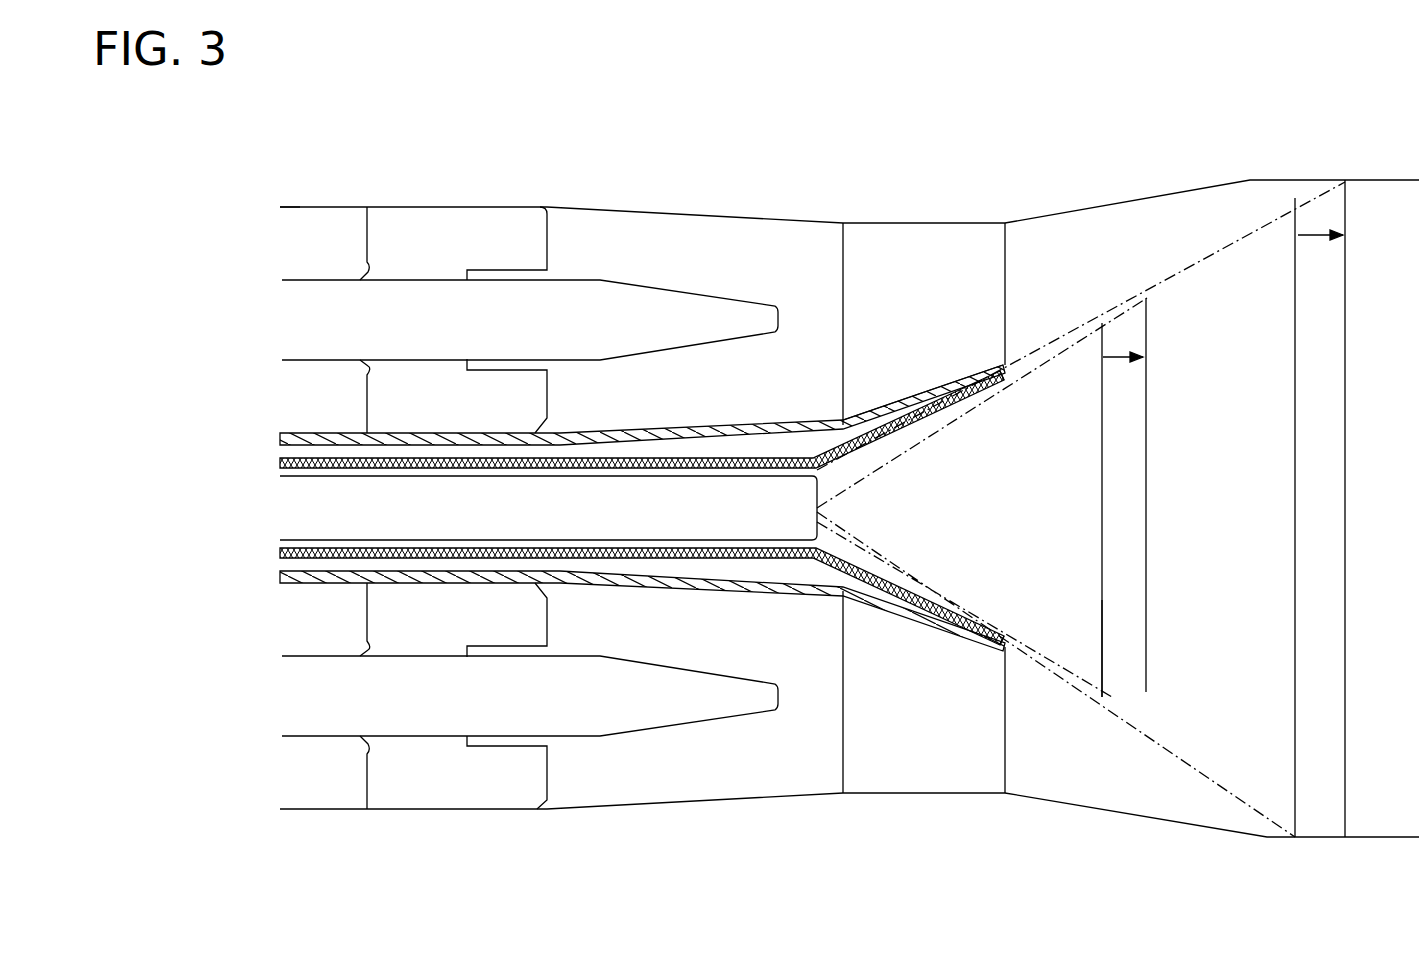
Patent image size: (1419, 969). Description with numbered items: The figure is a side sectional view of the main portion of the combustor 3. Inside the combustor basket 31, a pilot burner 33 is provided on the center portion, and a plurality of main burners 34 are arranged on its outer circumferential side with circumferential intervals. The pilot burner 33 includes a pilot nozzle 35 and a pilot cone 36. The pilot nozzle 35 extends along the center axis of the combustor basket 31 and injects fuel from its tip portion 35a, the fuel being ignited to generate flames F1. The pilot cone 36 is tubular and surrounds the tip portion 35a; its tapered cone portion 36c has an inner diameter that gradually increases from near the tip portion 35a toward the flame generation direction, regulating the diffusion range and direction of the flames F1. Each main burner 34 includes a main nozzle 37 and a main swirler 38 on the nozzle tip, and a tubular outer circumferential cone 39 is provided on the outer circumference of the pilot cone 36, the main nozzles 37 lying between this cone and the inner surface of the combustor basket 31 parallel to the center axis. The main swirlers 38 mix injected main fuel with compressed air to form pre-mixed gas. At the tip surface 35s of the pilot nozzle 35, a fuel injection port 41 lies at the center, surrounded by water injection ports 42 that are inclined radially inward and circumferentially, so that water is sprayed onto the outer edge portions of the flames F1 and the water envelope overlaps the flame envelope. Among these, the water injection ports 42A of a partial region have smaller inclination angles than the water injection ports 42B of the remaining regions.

The combustor 3 is at (1107, 194).
The combustor basket 31 is at (297, 208).
The pilot burner 33 is at (642, 429).
The main burner 34 is at (642, 495).
The pilot nozzle 35 is at (553, 437).
The tip portion 35a is at (763, 541).
The tip surface 35s is at (813, 592).
The pilot cone 36 is at (642, 457).
The tapered cone portion 36c is at (950, 640).
The main nozzle 37 is at (413, 278).
The main swirler 38 is at (367, 240).
The outer circumferential cone 39 is at (955, 375).
The fuel injection port 41 is at (822, 505).
The water injection port 42 is at (642, 521).
The water injection port of partial region 42A is at (882, 430).
The water injection port of remaining region 42B is at (887, 594).
The flames F1 is at (1095, 677).